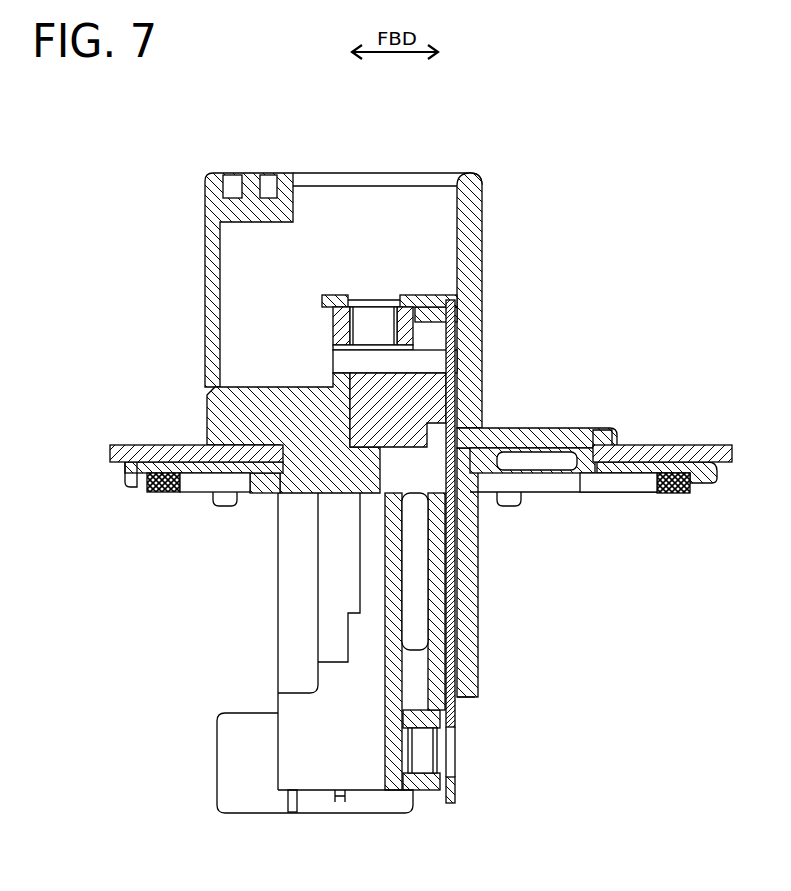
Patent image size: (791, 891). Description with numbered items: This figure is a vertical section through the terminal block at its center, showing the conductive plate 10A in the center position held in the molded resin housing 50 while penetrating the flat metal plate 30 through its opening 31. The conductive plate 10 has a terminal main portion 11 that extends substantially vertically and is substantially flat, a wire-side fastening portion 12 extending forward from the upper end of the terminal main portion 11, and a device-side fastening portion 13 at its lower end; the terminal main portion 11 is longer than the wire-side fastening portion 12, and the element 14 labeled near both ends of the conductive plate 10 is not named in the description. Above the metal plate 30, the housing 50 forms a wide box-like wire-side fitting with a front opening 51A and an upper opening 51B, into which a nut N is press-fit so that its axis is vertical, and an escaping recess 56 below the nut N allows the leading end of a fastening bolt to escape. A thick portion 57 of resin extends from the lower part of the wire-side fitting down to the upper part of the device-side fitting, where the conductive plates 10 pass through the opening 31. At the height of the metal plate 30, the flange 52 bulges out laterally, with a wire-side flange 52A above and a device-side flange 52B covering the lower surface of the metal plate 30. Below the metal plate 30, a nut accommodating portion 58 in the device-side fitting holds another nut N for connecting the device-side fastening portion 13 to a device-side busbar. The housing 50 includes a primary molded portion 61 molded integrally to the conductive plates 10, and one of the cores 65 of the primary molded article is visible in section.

The conductive plate 10 is at (458, 818).
The conductive plate in the center position 10A is at (469, 724).
The terminal main portion 11 is at (447, 560).
The wire-side fastening portion 12 is at (412, 294).
The device-side fastening portion 13 is at (450, 793).
The thread portion 14 is at (362, 292).
The metal plate 30 is at (698, 434).
The opening 31 is at (285, 468).
The housing 50 is at (516, 257).
The front opening 51A is at (238, 221).
The upper opening 51B is at (457, 204).
The flange 52 is at (566, 412).
The wire-side flange 52A is at (602, 436).
The device-side flange 52B is at (623, 463).
The escaping recess 56 is at (363, 368).
The thick portion 57 is at (218, 422).
The nut accommodating portion 58 is at (390, 712).
The primary molded portion 61 is at (443, 390).
The core 65 is at (386, 461).
The nut N is at (342, 322).